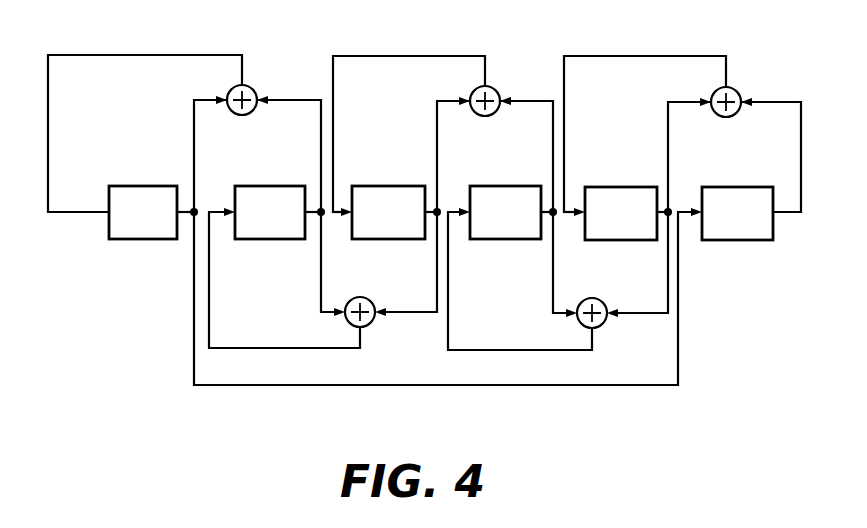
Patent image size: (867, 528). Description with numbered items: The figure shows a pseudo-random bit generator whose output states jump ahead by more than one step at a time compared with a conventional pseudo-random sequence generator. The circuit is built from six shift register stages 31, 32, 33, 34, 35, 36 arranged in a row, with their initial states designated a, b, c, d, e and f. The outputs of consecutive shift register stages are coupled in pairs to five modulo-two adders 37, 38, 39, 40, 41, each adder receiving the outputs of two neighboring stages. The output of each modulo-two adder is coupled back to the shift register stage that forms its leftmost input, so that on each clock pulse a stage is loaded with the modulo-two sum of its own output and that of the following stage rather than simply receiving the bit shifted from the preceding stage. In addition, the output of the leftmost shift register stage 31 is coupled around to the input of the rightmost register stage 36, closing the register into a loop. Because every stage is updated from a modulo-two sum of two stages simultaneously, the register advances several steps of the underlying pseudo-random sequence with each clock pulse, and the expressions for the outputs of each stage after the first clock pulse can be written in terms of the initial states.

The shift register stage 31 is at (152, 233).
The shift register stage 32 is at (276, 233).
The shift register stage 33 is at (397, 233).
The shift register stage 34 is at (517, 233).
The shift register stage 35 is at (628, 234).
The shift register stage 36 is at (750, 234).
The modulo-2 adder 37 is at (253, 89).
The modulo-2 adder 38 is at (371, 323).
The modulo-2 adder 39 is at (496, 90).
The modulo-2 adder 40 is at (603, 324).
The modulo-2 adder 41 is at (737, 91).